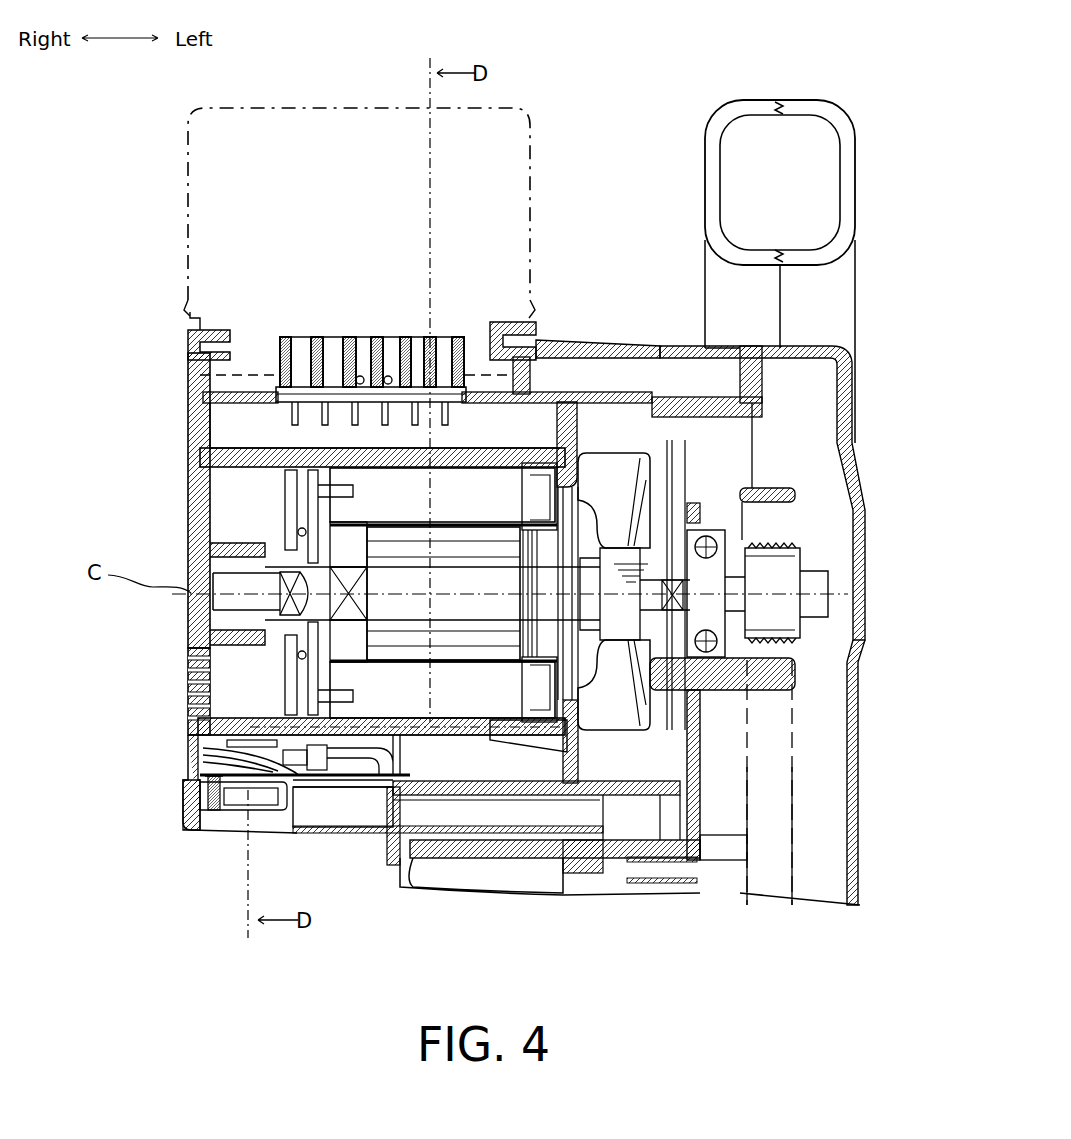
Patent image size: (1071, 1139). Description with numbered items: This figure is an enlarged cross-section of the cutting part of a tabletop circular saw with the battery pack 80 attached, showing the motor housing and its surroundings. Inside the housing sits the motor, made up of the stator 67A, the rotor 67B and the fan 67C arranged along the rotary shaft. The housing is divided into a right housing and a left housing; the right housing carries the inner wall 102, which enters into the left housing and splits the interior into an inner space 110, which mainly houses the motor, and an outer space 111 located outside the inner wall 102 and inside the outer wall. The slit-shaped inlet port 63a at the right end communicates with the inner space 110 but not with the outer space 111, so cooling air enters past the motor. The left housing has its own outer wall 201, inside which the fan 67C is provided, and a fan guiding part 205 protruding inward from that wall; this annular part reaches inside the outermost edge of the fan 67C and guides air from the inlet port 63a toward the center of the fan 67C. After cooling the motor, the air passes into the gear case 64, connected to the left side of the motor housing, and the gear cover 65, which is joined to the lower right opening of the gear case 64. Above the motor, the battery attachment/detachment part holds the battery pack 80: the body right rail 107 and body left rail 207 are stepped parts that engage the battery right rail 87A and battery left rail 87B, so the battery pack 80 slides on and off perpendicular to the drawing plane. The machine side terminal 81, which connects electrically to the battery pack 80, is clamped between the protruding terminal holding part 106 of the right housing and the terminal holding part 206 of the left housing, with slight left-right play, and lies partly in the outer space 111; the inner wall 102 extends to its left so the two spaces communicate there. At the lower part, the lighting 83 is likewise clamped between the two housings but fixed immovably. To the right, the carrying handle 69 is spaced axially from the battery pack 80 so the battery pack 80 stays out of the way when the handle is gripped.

The carrying handle 69 is at (822, 102).
The battery pack 80 is at (371, 219).
The machine side terminal 81 is at (345, 337).
The body right rail 107 is at (189, 349).
The battery right rail 87A is at (200, 375).
The terminal holding part 106 is at (203, 400).
The outer space 111 is at (253, 431).
The inner wall 102 is at (288, 464).
The inner space 110 is at (248, 517).
The inlet port 63a is at (188, 702).
The lighting 83 is at (228, 808).
The outer wall 201 is at (333, 785).
The fan guiding part 205 is at (735, 445).
The gear case 64 is at (720, 780).
The gear cover 65 is at (863, 630).
The terminal holding part 206 is at (501, 414).
The body left rail 207 is at (520, 350).
The battery left rail 87B is at (540, 345).
The stator 67A is at (496, 505).
The rotor 67B is at (496, 586).
The fan 67C is at (633, 489).